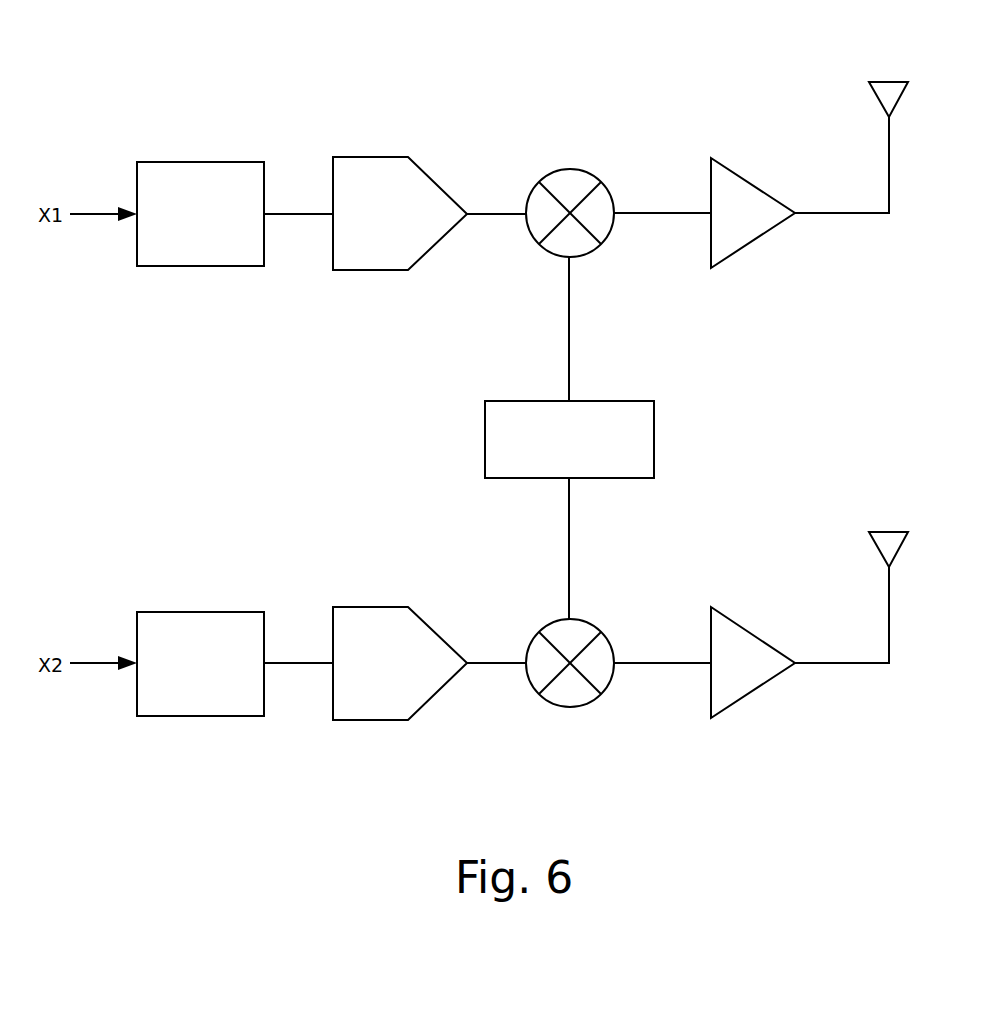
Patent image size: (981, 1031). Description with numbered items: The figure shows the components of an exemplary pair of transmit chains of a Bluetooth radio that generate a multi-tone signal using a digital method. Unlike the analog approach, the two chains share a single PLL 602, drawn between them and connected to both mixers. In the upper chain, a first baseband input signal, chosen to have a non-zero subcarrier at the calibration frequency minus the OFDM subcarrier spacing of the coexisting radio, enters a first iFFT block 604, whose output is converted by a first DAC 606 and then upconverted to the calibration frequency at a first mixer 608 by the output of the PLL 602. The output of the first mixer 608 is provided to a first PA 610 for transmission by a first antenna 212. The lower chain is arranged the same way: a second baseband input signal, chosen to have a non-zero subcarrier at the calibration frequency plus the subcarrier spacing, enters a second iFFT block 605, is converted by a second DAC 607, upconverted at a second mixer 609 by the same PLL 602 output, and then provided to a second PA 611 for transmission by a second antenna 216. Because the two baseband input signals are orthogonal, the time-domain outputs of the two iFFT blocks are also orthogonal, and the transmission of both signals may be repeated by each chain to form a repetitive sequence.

The first iFFT block 604 is at (200, 214).
The second iFFT block 605 is at (200, 664).
The first DAC 606 is at (400, 213).
The second DAC 607 is at (400, 663).
The first mixer 608 is at (613, 192).
The second mixer 609 is at (613, 644).
The first PA 610 is at (753, 213).
The second PA 611 is at (753, 662).
The PLL 602 is at (569, 439).
The first antenna 212 is at (867, 78).
The second antenna 216 is at (867, 529).